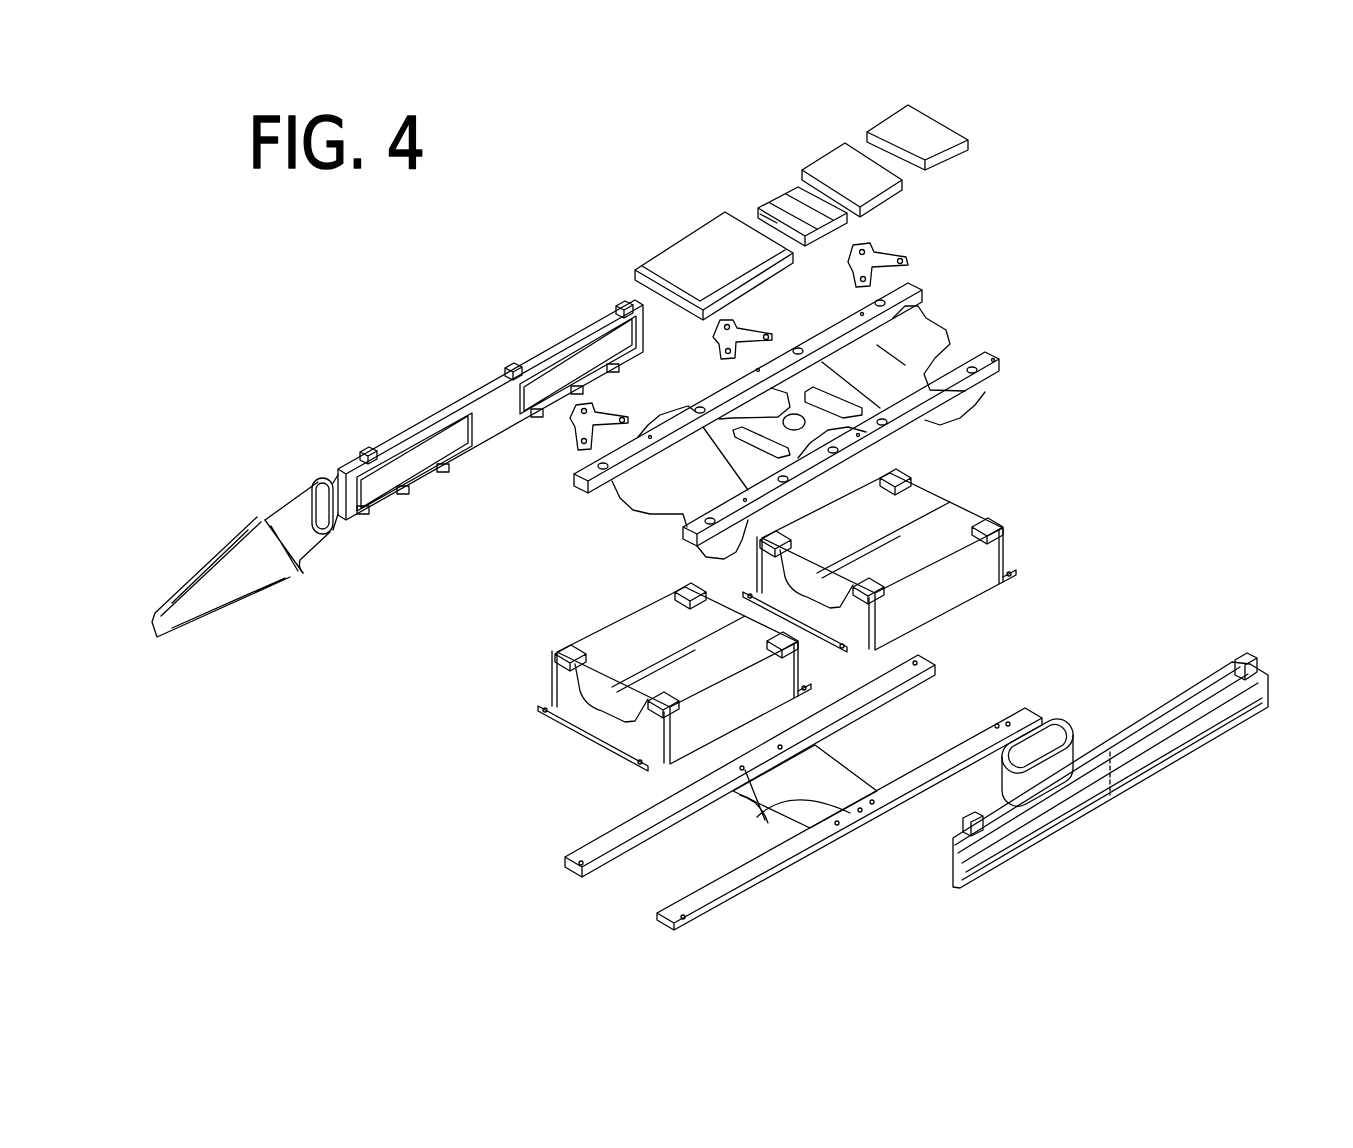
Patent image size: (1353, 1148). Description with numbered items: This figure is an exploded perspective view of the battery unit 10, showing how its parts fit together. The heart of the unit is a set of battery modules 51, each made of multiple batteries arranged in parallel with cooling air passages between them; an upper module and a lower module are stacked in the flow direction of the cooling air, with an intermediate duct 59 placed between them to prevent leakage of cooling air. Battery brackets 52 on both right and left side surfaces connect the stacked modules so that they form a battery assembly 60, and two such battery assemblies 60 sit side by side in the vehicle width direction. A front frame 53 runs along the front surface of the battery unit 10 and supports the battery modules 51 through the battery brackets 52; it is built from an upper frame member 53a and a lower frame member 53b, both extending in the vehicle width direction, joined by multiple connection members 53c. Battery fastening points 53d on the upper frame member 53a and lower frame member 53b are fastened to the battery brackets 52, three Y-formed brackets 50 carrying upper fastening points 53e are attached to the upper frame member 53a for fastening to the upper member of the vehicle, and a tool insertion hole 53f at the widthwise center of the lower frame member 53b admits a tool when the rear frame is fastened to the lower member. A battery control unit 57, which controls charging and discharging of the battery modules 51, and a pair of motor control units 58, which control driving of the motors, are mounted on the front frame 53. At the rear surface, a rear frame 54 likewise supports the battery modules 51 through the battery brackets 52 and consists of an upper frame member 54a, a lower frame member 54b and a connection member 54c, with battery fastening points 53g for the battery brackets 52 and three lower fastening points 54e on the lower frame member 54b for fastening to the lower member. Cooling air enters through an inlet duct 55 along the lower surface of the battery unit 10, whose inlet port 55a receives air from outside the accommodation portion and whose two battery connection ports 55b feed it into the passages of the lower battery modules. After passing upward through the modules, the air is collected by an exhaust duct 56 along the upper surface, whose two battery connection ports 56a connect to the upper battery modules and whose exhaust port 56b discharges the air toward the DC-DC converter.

The battery unit 10 is at (1072, 386).
The Y-formed bracket 50 is at (719, 354).
The battery module 51 is at (768, 625).
The battery bracket 52 is at (768, 633).
The front frame 53 is at (756, 433).
The upper frame member 53a is at (574, 484).
The lower frame member 53b is at (683, 537).
The connection member 53c is at (940, 332).
The battery fastening point 53d is at (796, 342).
The upper fastening point 53e is at (876, 252).
The tool insertion hole 53f is at (845, 452).
The battery fastening point 53g is at (995, 726).
The rear frame 54 is at (770, 796).
The upper frame member 54a is at (582, 860).
The lower frame member 54b is at (758, 888).
The connection member 54c is at (848, 778).
The lower fastening point 54e is at (1008, 722).
The inlet duct 55 is at (1113, 770).
The inlet port 55a is at (1046, 740).
The battery connection port 55b is at (1205, 748).
The exhaust duct 56 is at (397, 464).
The battery connection port 56a is at (578, 355).
The exhaust port 56b is at (232, 582).
The battery control unit 57 is at (688, 242).
The motor control unit 58 is at (830, 160).
The intermediate duct 59 is at (868, 542).
The battery assembly 60 is at (968, 592).